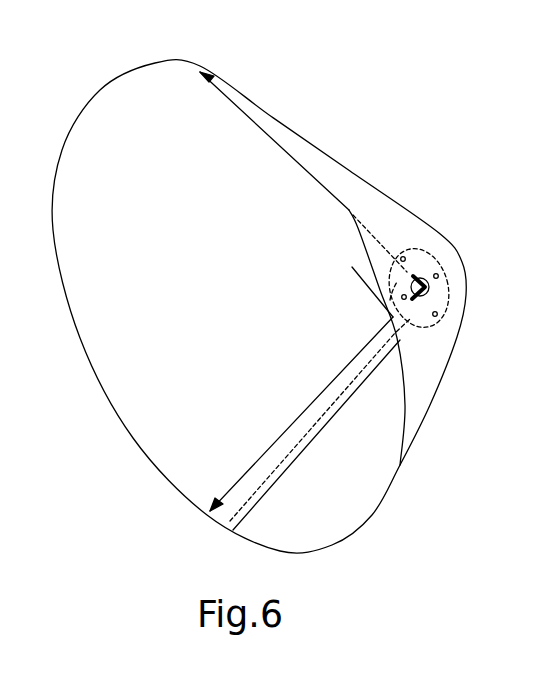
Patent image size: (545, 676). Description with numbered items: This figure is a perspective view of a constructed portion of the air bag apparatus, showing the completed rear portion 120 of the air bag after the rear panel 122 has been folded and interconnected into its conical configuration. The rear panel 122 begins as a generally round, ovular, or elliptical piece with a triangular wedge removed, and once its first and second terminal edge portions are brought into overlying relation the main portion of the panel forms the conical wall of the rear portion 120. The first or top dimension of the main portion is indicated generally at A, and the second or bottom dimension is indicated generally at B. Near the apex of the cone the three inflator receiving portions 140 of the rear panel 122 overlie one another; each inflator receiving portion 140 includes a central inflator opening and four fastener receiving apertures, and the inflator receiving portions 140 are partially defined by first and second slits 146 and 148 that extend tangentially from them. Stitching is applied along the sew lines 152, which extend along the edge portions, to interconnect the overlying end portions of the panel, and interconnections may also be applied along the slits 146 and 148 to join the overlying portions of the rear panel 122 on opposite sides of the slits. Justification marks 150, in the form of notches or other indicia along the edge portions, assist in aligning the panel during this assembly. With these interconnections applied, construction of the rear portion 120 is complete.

The rear portion 120 is at (259, 281).
The rear panel 122 is at (372, 100).
The inflator receiving portion 140 is at (445, 280).
The first slit 146 is at (372, 287).
The second slit 148 is at (447, 327).
The justification marks 150 is at (334, 412).
The sew lines 152 is at (309, 441).
The top dimension A is at (293, 162).
The bottom dimension B is at (295, 411).